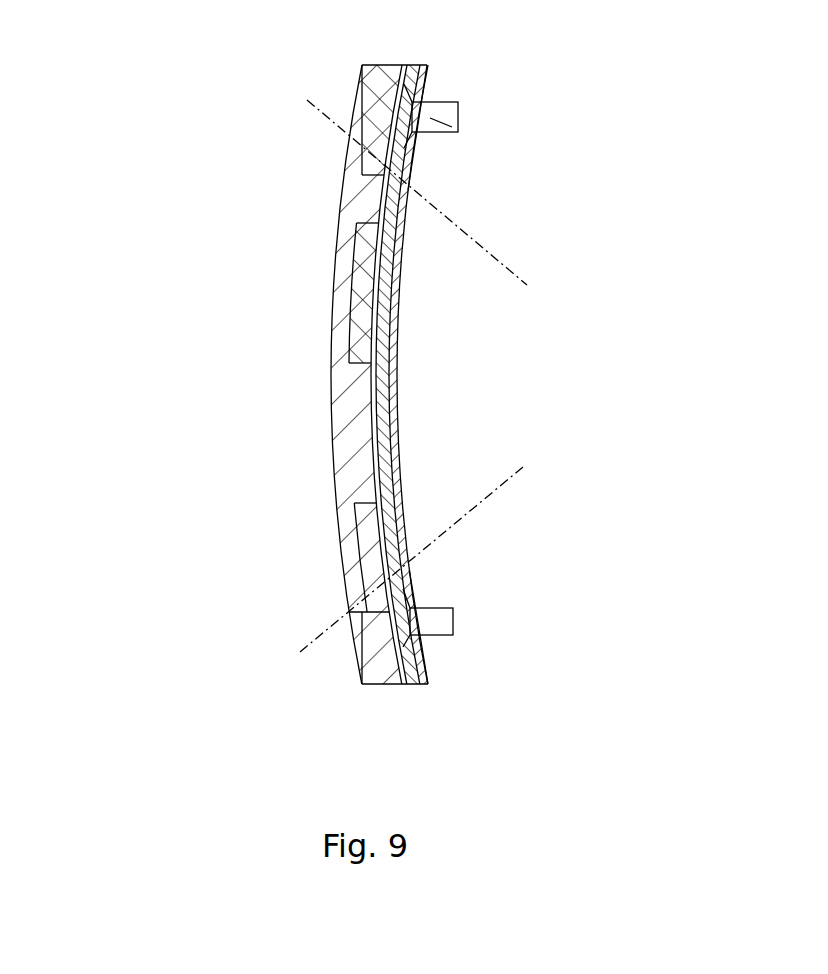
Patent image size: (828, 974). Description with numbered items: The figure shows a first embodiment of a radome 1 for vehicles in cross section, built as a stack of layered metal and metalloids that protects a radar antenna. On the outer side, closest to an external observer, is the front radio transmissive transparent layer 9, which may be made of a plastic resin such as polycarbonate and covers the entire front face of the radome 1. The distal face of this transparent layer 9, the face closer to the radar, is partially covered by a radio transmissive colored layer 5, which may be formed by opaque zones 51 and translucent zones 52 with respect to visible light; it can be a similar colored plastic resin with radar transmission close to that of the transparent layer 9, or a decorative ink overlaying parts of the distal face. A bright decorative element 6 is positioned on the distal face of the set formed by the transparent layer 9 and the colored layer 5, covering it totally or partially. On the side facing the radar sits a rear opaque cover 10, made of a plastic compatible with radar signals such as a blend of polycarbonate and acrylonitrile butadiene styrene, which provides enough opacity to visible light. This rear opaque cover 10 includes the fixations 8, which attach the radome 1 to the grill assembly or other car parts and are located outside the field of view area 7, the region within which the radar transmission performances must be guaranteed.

The radome 1 is at (371, 371).
The radio transmissive colored layer 5 is at (223, 380).
The opaque zones 51 is at (345, 108).
The translucent zones 52 is at (333, 323).
The bright decorative element 6 is at (337, 190).
The field of view area 7 is at (442, 396).
The fixations 8 is at (435, 600).
The front radio transmissive transparent layer 9 is at (335, 288).
The rear opaque cover 10 is at (420, 665).